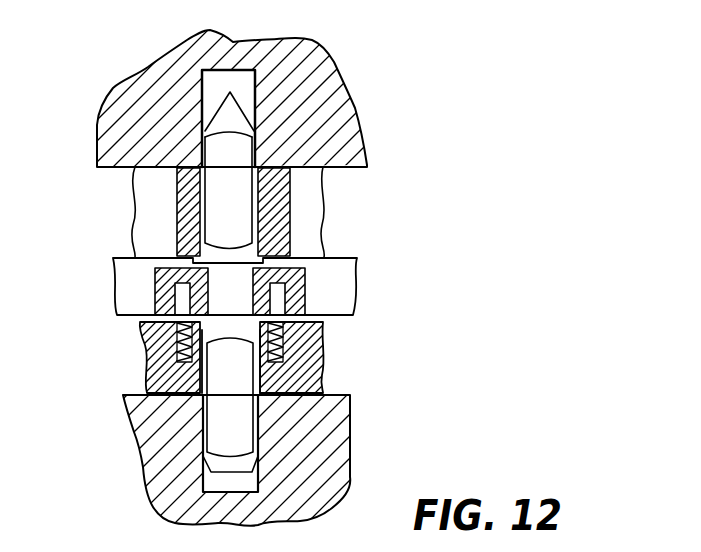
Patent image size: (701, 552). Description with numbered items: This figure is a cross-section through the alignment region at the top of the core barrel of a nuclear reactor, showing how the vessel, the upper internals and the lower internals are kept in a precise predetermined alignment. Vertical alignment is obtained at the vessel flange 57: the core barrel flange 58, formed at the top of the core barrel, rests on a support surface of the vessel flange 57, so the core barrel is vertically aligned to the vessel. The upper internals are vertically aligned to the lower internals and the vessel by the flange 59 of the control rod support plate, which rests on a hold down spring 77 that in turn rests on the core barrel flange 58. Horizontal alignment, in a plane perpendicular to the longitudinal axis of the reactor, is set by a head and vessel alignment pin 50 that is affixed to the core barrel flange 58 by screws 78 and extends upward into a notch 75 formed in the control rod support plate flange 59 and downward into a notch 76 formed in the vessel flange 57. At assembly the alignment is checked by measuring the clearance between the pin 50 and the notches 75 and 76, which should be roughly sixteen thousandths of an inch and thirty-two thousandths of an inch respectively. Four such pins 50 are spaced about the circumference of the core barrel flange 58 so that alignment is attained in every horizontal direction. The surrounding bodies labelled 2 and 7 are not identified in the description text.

The upper die body 2 is at (333, 92).
The head and vessel alignment pin 50 is at (212, 113).
The control rod support plate flange 59 is at (320, 183).
The notch 75 is at (270, 208).
The hold down spring 77 is at (130, 288).
The plate 7 is at (357, 287).
The screw 78 is at (165, 343).
The core barrel flange 58 is at (323, 362).
The vessel flange 57 is at (153, 450).
The notch 76 is at (260, 472).